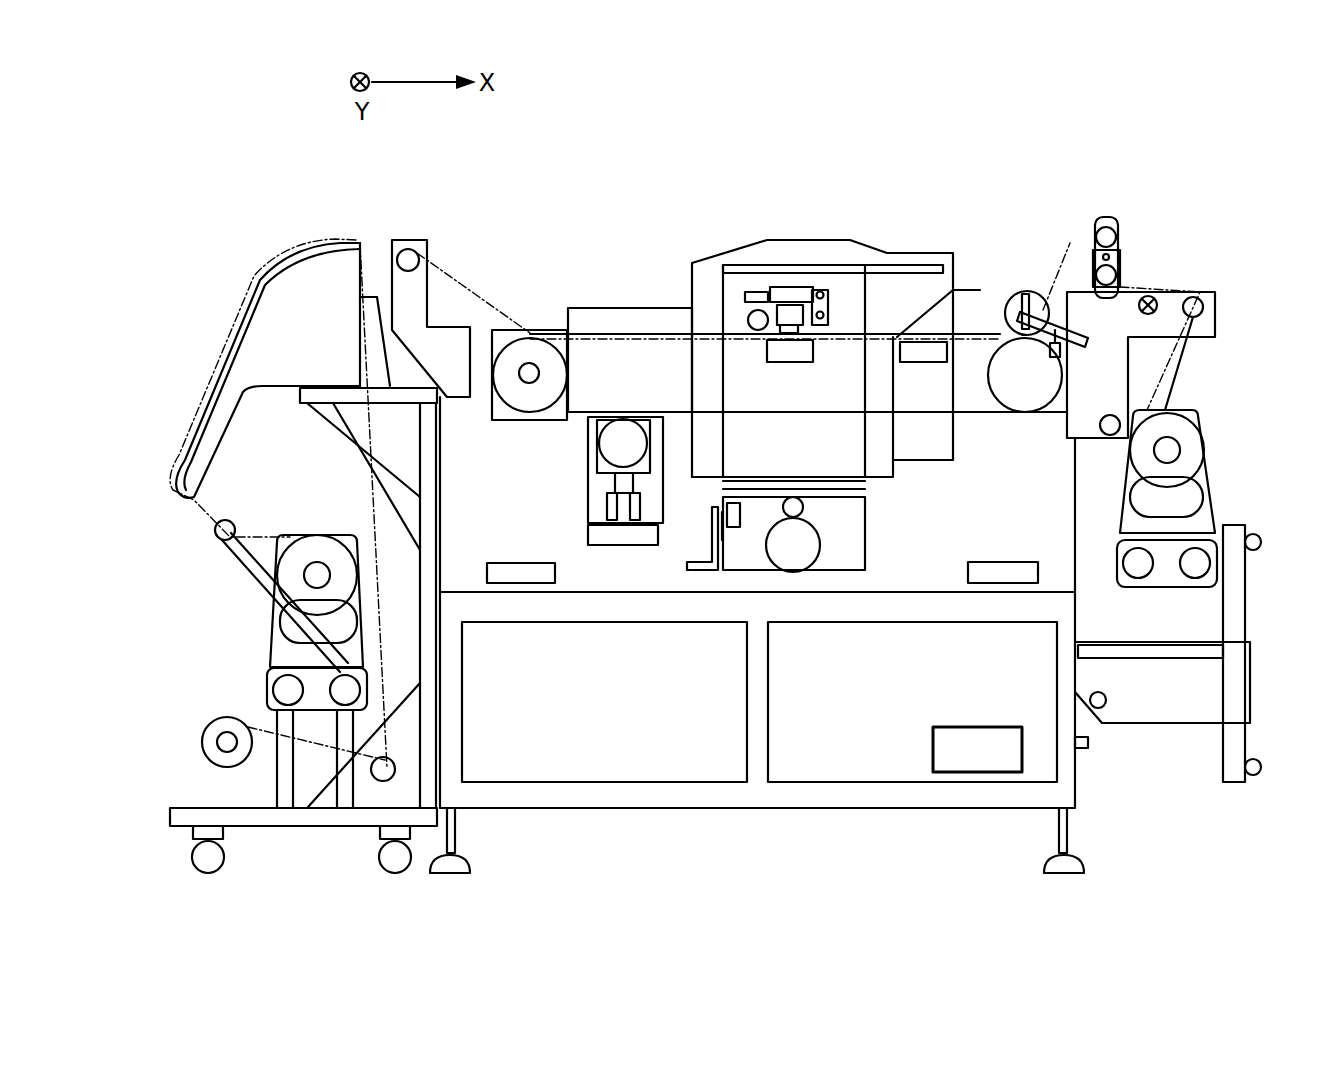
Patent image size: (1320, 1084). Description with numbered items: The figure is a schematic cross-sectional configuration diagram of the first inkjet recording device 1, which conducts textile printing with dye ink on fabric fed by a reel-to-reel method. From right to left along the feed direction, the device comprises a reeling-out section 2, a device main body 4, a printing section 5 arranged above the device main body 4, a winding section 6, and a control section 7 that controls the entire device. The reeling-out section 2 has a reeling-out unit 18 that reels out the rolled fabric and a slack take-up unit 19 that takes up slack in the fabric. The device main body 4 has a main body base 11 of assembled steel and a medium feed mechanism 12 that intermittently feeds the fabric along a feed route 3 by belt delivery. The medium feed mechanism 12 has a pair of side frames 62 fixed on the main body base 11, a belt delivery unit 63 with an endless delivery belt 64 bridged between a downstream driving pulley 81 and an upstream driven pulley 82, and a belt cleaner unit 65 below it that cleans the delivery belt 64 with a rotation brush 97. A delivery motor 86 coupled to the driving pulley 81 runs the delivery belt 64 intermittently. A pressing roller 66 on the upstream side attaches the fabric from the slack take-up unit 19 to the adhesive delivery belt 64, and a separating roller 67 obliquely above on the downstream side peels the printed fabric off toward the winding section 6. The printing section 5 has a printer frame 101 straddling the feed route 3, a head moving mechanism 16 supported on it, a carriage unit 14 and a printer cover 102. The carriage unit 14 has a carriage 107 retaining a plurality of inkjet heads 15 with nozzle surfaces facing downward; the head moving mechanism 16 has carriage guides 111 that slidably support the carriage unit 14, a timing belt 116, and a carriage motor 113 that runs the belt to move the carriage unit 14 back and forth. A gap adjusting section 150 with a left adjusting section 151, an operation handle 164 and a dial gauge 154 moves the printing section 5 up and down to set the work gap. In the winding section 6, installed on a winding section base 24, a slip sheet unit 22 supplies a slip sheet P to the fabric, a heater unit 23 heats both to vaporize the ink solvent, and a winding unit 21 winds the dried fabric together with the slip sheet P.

The first inkjet recording device 1 is at (680, 138).
The reeling-out section 2 is at (1190, 170).
The feed route 3 is at (470, 280).
The device main body 4 is at (622, 832).
The printing section 5 is at (896, 146).
The winding section 6 is at (300, 196).
The control section 7 is at (1003, 772).
The main body base 11 is at (518, 793).
The medium feed mechanism 12 is at (606, 240).
The carriage unit 14 is at (870, 214).
The inkjet head 15 is at (872, 333).
The head moving mechanism 16 is at (665, 176).
The reeling-out unit 18 is at (1228, 453).
The slack take-up unit 19 is at (1146, 240).
The winding unit 21 is at (262, 634).
The slip sheet unit 22 is at (190, 743).
The heater unit 23 is at (232, 322).
The winding section base 24 is at (290, 808).
The side frame 62 is at (675, 577).
The belt delivery unit 63 is at (552, 325).
The delivery belt 64 is at (650, 330).
The belt cleaner unit 65 is at (597, 405).
The pressing roller 66 is at (1013, 310).
The separating roller 67 is at (408, 256).
The driving pulley 81 is at (515, 350).
The driven pulley 82 is at (1010, 360).
The delivery motor 86 is at (530, 365).
The rotation brush 97 is at (643, 453).
The printer frame 101 is at (945, 275).
The printer cover 102 is at (832, 262).
The carriage 107 is at (820, 330).
The carriage guide 111 is at (822, 312).
The carriage motor 113 is at (745, 310).
The timing belt 116 is at (762, 300).
The gap adjusting section 150 is at (775, 679).
The left adjusting section 151 is at (805, 570).
The dial gauge 154 is at (738, 527).
The operation handle 164 is at (696, 572).
The slip sheet P is at (268, 736).